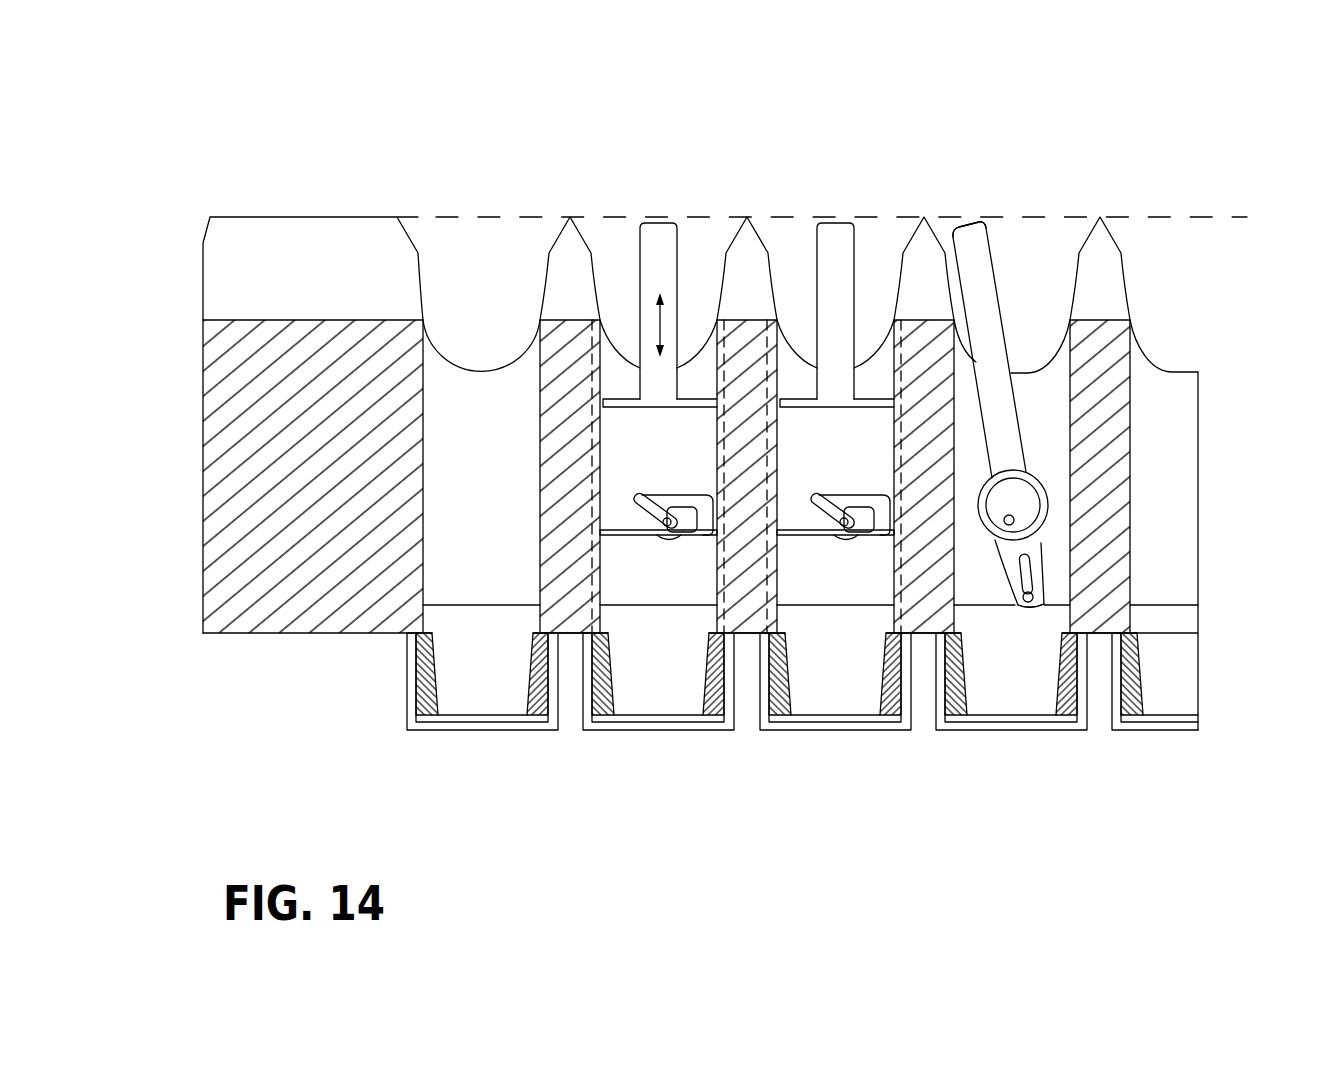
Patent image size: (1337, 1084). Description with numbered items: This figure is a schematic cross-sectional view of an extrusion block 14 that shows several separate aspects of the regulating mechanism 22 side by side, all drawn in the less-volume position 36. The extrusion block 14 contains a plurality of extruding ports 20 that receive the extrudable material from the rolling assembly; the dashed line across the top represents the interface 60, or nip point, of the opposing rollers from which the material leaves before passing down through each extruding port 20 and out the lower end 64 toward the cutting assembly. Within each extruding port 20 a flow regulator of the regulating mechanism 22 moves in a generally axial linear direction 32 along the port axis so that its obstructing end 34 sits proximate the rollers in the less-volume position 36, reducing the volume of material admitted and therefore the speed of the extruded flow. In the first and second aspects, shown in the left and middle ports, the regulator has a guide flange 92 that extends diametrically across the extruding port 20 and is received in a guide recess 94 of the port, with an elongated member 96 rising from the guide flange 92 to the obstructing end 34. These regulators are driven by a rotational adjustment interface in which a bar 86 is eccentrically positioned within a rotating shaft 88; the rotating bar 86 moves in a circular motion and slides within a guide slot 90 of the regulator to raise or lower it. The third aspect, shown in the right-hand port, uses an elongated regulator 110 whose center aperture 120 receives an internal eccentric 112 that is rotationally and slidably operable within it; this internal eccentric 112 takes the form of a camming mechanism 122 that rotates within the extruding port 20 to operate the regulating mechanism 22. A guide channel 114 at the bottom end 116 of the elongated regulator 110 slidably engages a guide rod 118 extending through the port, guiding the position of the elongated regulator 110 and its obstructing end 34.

The extrusion block 14 is at (327, 167).
The extruding port 20 is at (1042, 398).
The regulating mechanism 22 is at (970, 195).
The linear direction 32 is at (657, 322).
The obstructing end 34 is at (660, 223).
The less-volume position 36 is at (840, 205).
The interface 60 is at (1158, 217).
The lower end 64 is at (1015, 742).
The bar 86 is at (686, 535).
The rotating shaft 88 is at (670, 533).
The guide slot 90 is at (640, 503).
The guide flange 92 is at (633, 445).
The guide recess 94 is at (770, 565).
The elongated member 96 is at (660, 257).
The elongated regulator 110 is at (978, 293).
The internal eccentric 112 is at (1020, 502).
The guide channel 114 is at (1032, 577).
The bottom end 116 is at (1018, 588).
The guide rod 118 is at (1027, 602).
The center aperture 120 is at (1045, 522).
The camming mechanism 122 is at (1053, 541).